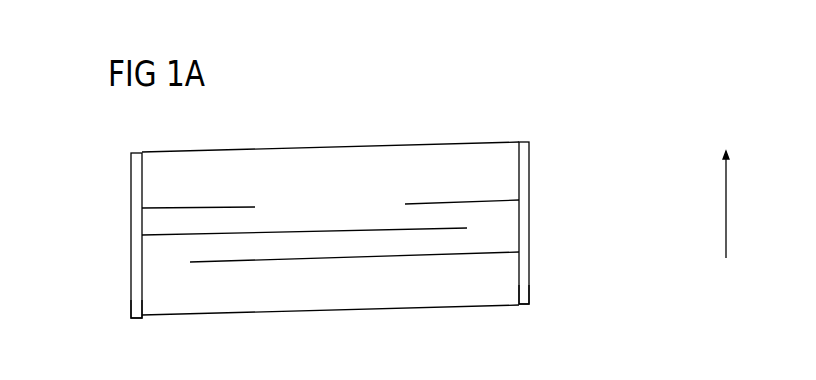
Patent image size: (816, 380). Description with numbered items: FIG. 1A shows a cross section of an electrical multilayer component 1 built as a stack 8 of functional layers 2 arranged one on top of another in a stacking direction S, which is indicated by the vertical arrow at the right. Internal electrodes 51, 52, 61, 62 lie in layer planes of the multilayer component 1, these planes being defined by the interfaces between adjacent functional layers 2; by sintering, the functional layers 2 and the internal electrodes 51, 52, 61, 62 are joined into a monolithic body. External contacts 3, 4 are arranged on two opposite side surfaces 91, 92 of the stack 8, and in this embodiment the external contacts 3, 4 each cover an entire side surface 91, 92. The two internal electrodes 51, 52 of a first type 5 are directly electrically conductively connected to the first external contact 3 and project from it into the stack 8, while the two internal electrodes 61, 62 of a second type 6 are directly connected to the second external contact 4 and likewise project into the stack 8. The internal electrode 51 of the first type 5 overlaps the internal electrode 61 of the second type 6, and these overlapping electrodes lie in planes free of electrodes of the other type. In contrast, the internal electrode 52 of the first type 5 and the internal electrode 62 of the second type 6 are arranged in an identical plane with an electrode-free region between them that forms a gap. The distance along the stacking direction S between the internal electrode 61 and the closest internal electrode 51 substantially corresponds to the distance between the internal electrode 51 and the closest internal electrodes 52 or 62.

The electrical multilayer component 1 is at (330, 202).
The functional layers 2 is at (503, 266).
The first external contact 3 is at (129, 165).
The second external contact 4 is at (529, 297).
The first type 5 is at (237, 224).
The internal electrode of the first type 51 is at (268, 247).
The internal electrode of the first type 52 is at (158, 208).
The second type 6 is at (422, 211).
The internal electrode of the second type 61 is at (492, 252).
The internal electrode of the second type 62 is at (492, 201).
The stack 8 is at (503, 153).
The side surface 91 is at (143, 303).
The side surface 92 is at (521, 292).
The stacking direction S is at (728, 200).